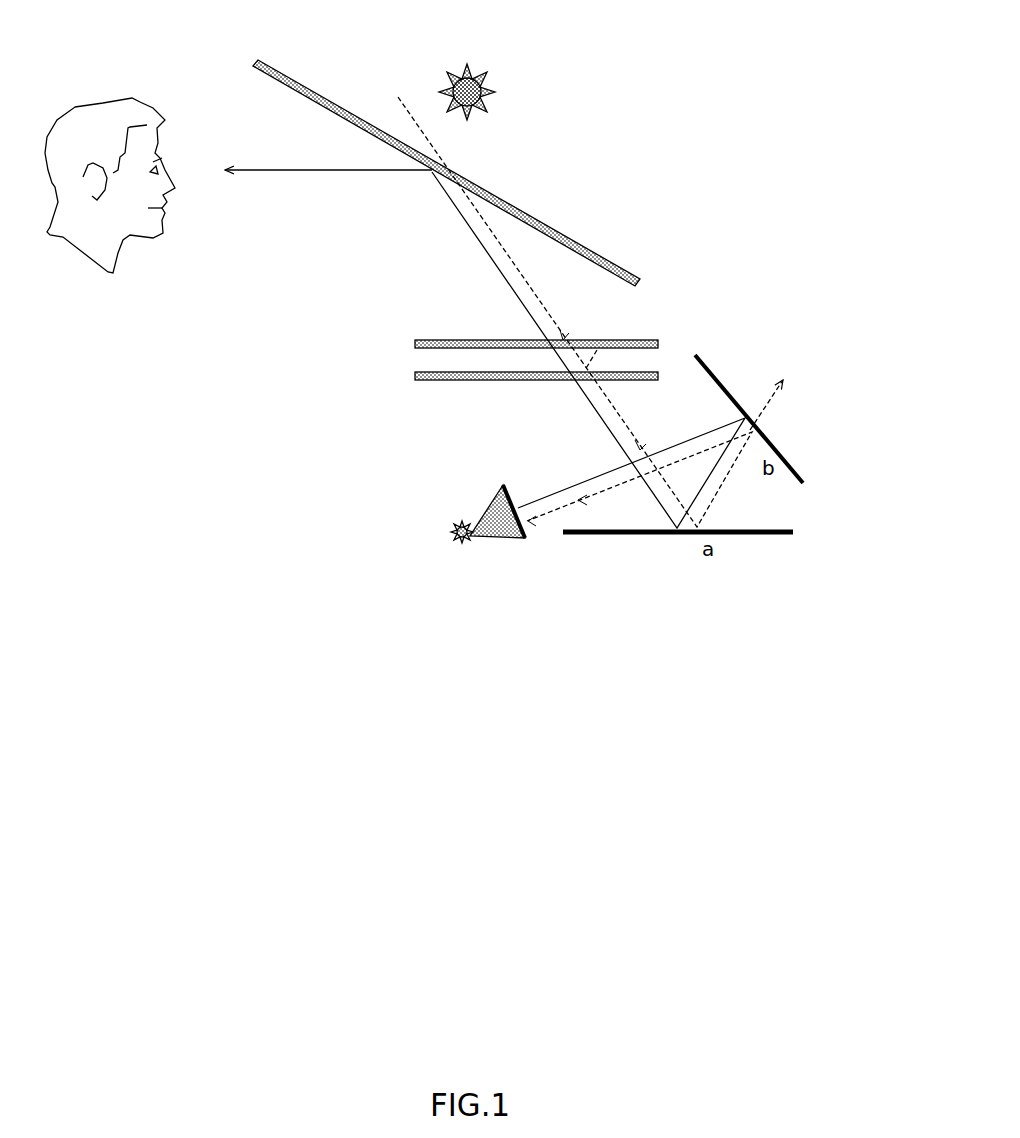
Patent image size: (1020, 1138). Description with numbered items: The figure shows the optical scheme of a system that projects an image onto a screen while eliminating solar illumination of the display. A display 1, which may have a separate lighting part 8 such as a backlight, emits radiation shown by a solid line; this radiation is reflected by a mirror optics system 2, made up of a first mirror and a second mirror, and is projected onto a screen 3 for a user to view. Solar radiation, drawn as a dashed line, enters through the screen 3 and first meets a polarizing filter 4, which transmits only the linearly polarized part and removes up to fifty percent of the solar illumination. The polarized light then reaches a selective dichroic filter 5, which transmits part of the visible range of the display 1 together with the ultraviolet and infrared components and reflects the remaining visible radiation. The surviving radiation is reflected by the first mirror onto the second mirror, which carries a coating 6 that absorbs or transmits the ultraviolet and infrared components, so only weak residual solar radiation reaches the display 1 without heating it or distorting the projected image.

The display 1 is at (530, 540).
The mirror optics system 2 is at (832, 513).
The screen 3 is at (312, 87).
The polarizing filter 4 is at (648, 338).
The selective dichroic filter 5 is at (420, 380).
The coating 6 is at (723, 383).
The lighting part 8 is at (457, 540).